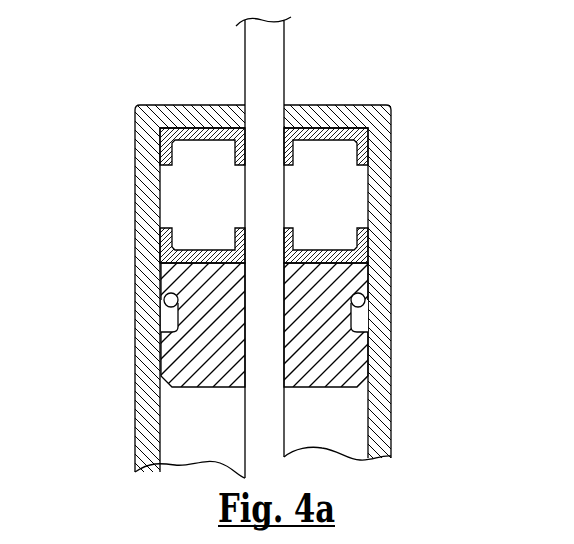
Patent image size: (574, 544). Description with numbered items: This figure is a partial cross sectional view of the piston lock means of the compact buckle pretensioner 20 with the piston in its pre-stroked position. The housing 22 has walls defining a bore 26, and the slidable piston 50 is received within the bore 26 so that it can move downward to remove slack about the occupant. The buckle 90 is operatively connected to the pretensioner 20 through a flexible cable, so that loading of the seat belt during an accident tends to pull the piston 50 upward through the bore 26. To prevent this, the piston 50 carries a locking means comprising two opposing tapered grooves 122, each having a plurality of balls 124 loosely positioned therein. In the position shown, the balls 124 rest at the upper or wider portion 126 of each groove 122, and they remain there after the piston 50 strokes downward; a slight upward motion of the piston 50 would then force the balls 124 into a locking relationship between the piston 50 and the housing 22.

The compact buckle pretensioner 20 is at (103, 65).
The housing 22 is at (143, 197).
The bore 26 is at (370, 413).
The piston 50 is at (190, 390).
The buckle 90 is at (263, 53).
The tapered groove 122 is at (361, 316).
The ball 124 is at (166, 300).
The upper portion of the groove 126 is at (366, 280).